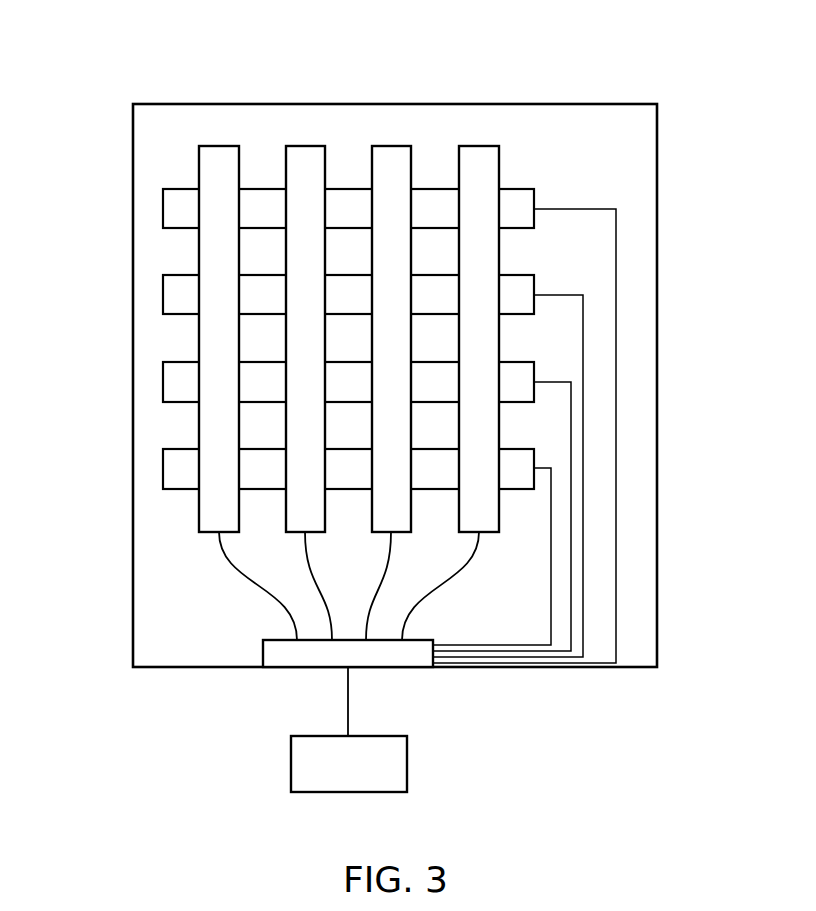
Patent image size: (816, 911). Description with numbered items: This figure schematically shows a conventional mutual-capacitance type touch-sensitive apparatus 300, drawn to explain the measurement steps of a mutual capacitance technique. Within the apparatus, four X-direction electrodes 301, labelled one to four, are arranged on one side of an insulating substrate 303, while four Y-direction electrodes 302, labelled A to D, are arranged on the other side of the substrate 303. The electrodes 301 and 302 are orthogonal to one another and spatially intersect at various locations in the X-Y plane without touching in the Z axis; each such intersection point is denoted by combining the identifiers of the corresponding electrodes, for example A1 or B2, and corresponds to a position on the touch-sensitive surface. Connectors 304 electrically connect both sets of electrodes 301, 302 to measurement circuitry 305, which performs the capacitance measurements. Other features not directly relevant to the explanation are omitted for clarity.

The touch-sensitive apparatus 300 is at (688, 94).
The X-direction electrodes 301 is at (138, 185).
The Y-direction electrodes 302 is at (505, 110).
The insulating substrate 303 is at (658, 255).
The connectors 304 is at (348, 690).
The measurement circuitry 305 is at (407, 767).